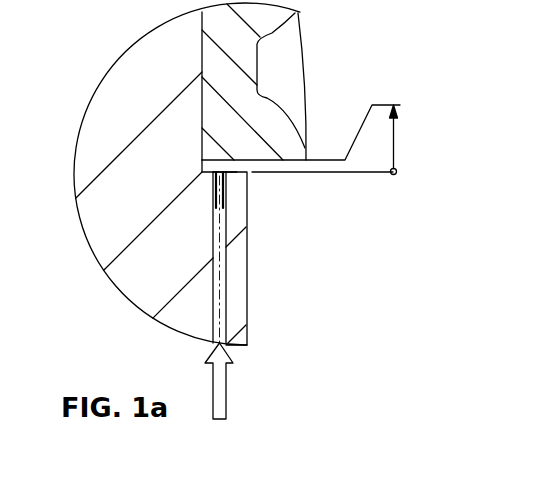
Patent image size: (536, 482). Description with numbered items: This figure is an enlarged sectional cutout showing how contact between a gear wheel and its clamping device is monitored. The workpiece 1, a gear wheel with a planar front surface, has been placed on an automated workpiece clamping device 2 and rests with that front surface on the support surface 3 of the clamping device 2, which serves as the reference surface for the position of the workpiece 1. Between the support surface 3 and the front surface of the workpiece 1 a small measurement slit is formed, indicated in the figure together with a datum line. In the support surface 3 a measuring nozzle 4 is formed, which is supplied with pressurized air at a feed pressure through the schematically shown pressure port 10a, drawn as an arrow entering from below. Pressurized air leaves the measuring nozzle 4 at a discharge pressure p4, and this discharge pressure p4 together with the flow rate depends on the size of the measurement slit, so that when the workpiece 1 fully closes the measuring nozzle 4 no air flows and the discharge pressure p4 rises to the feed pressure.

The workpiece 1 is at (283, 68).
The workpiece clamping device 2 is at (108, 145).
The support surface 3 is at (237, 172).
The measuring nozzle 4 is at (225, 183).
The discharge pressure p4 is at (225, 220).
The pressure port 10a is at (227, 377).